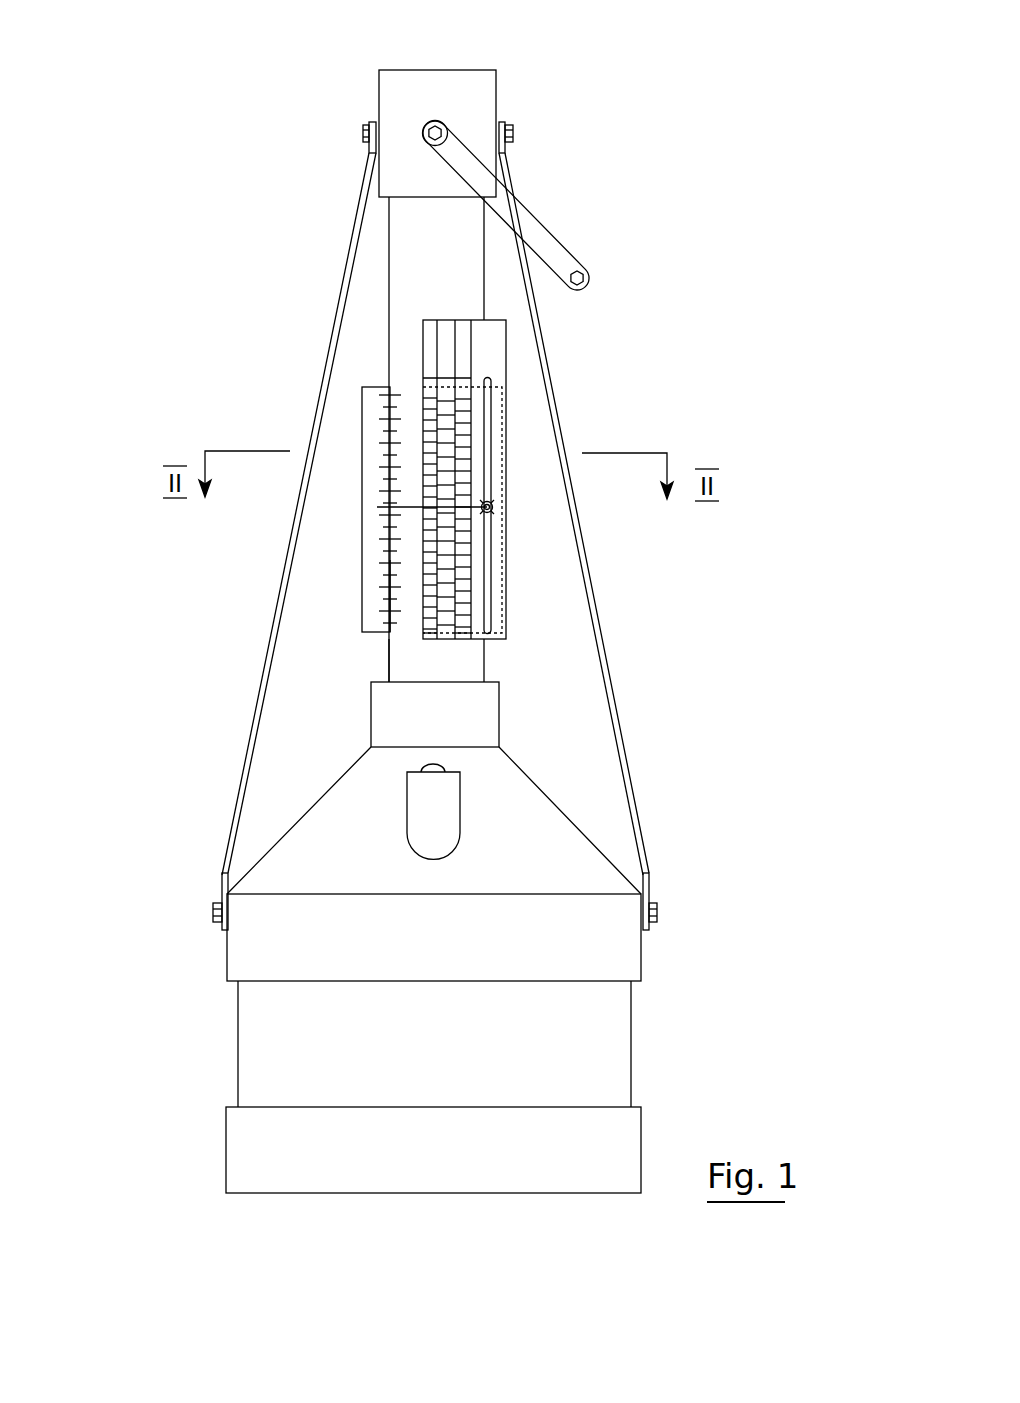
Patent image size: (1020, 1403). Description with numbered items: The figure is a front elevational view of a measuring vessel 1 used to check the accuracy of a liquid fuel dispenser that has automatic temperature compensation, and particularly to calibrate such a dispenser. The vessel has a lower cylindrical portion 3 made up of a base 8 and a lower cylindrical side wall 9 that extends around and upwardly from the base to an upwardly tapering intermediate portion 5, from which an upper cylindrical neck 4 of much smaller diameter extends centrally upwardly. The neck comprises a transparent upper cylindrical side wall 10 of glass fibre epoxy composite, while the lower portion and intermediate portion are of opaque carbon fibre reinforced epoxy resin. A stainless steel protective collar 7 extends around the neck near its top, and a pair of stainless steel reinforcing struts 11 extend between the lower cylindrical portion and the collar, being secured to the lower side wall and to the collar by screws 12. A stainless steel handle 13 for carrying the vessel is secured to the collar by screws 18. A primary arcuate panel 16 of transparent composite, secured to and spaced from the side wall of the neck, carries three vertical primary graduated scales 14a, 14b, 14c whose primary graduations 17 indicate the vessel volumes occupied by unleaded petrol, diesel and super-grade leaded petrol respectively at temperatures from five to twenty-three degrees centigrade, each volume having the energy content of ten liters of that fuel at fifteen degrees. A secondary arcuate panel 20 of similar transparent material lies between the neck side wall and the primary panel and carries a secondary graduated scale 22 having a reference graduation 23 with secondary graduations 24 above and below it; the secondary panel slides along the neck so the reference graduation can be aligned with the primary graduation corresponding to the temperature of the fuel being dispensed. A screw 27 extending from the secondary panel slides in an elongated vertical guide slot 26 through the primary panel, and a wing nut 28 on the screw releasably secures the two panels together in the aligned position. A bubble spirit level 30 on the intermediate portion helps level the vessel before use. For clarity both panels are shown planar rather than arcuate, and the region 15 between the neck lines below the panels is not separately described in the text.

The measuring vessel 1 is at (704, 361).
The lower cylindrical portion 3 is at (607, 1020).
The upper cylindrical neck 4 is at (458, 270).
The intermediate portion 5 is at (519, 796).
The protective collar 7 is at (421, 90).
The base 8 is at (430, 1195).
The lower cylindrical side wall 9 is at (609, 1073).
The upper cylindrical side wall 10 is at (402, 247).
The reinforcing struts 11 is at (244, 766).
The screws 12 is at (363, 134).
The handle 13 is at (528, 228).
The primary graduated scale 14a is at (446, 640).
The primary graduated scale 14b is at (428, 640).
The primary graduated scale 14c is at (463, 640).
The line passage 15 is at (406, 660).
The primary arcuate panel 16 is at (497, 335).
The primary graduations 17 is at (430, 405).
The screws 18 is at (440, 126).
The secondary arcuate panel 20 is at (373, 443).
The secondary graduated scale 22 is at (371, 590).
The reference graduation 23 is at (381, 515).
The secondary graduations 24 is at (390, 405).
The guide slot 26 is at (488, 606).
The screw 27 is at (492, 510).
The wing nut 28 is at (492, 503).
The bubble spirit level 30 is at (436, 765).